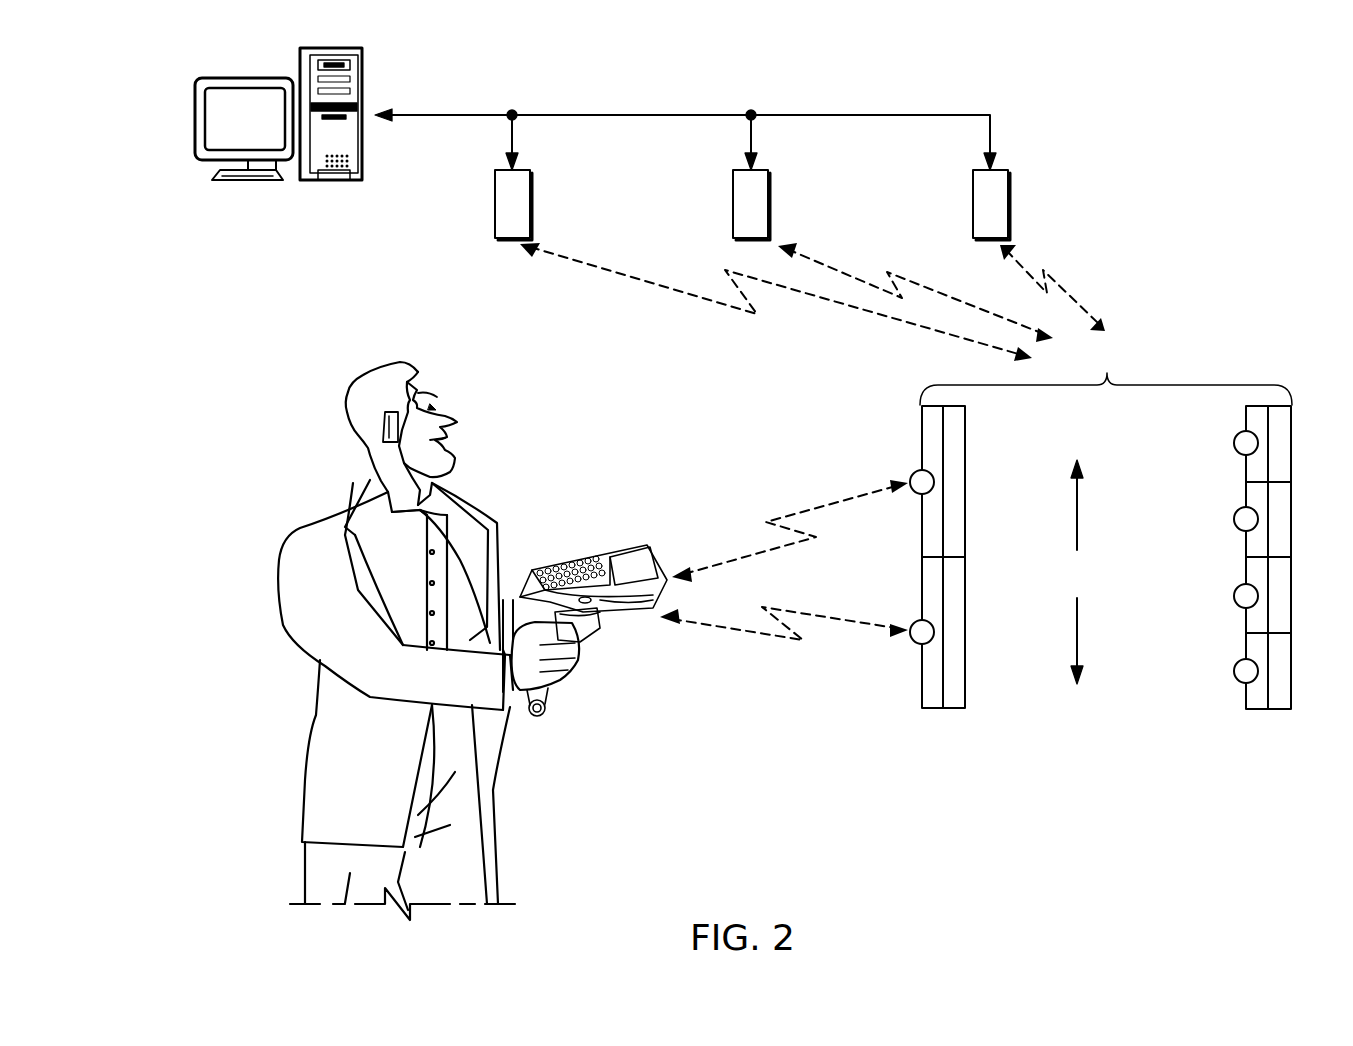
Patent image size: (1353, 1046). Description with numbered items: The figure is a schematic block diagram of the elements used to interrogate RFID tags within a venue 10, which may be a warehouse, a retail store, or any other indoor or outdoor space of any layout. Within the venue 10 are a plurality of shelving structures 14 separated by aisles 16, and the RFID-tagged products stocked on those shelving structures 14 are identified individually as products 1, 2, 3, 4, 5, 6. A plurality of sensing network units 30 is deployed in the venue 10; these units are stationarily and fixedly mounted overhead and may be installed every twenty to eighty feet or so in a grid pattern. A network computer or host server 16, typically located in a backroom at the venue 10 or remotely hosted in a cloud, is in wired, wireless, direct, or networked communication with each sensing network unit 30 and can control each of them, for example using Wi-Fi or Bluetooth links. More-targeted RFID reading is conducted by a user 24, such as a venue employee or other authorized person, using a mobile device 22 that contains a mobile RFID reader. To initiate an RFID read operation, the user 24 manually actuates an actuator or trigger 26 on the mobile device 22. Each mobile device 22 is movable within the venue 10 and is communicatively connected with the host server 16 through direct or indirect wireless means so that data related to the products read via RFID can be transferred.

The venue 10 is at (1106, 374).
The shelving structures 14 is at (950, 405).
The aisles / host server 16 is at (196, 118).
The mobile device 22 is at (622, 632).
The user 24 is at (265, 589).
The trigger 26 is at (585, 640).
The sensing network units 30 is at (495, 204).
The product 1 is at (911, 470).
The product 2 is at (910, 641).
The product 3 is at (1236, 437).
The product 4 is at (1236, 512).
The product 5 is at (1236, 604).
The product 6 is at (1236, 680).